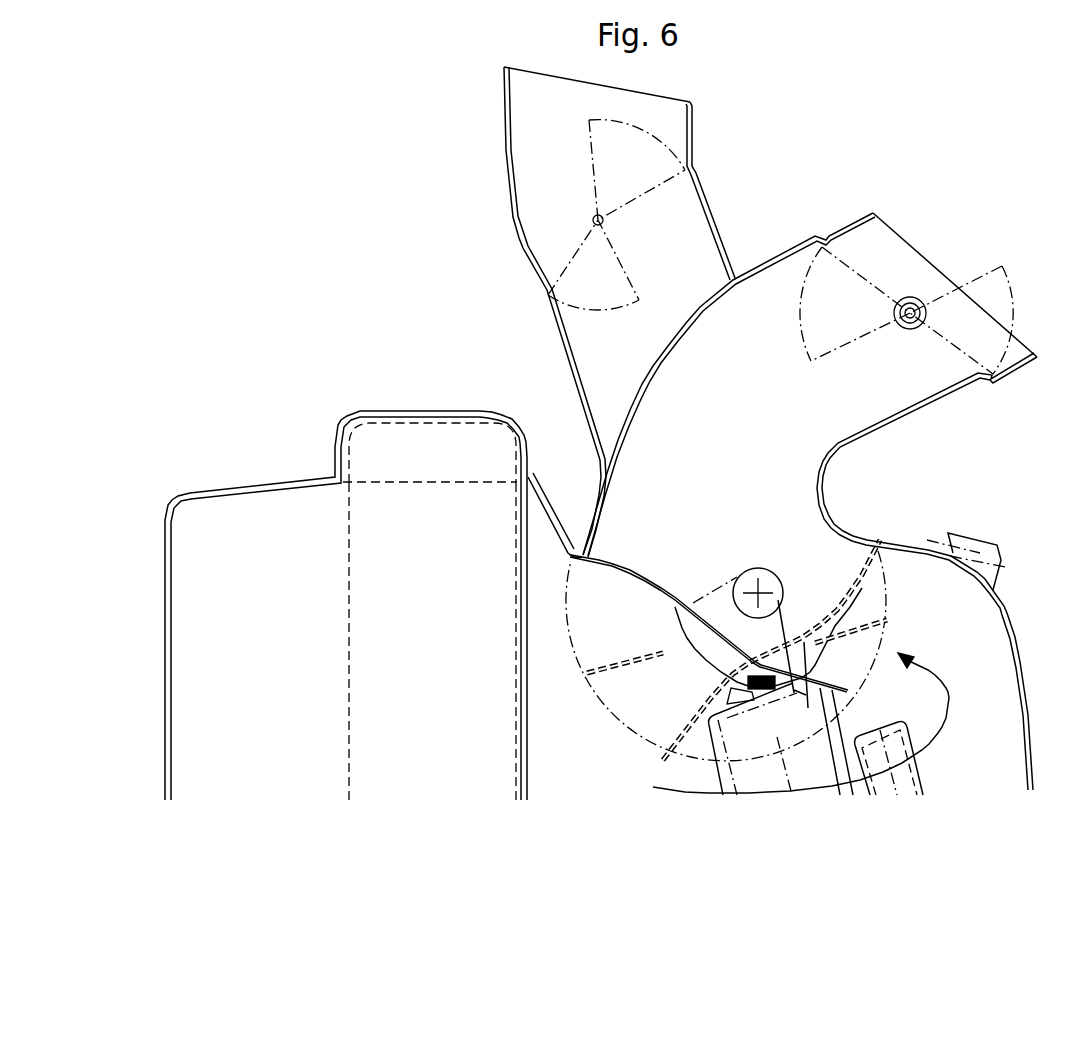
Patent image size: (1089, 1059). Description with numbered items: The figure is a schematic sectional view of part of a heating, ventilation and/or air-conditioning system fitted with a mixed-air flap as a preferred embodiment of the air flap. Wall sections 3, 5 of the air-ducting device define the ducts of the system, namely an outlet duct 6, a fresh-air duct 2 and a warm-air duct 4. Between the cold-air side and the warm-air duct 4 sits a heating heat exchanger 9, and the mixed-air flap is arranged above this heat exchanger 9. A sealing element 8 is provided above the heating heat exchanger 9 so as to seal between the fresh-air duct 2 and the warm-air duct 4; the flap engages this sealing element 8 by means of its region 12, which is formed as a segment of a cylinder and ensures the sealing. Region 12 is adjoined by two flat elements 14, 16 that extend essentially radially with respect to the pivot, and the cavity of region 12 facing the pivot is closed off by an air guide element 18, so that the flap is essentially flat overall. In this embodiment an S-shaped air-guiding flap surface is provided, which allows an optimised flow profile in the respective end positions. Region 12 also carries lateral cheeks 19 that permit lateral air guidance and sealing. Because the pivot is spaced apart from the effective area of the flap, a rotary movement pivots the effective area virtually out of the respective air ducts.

The fresh-air duct 2 is at (557, 738).
The wall section 3 is at (589, 518).
The warm-air duct 4 is at (950, 675).
The wall section 5 is at (877, 538).
The outlet duct 6 is at (715, 438).
The sealing element 8 is at (760, 690).
The heating heat exchanger 9 is at (803, 751).
The region 12 is at (700, 657).
The flat element 14 is at (821, 692).
The flat element 16 is at (618, 568).
The air guide element 18 is at (707, 612).
The lateral cheek 19 is at (773, 574).